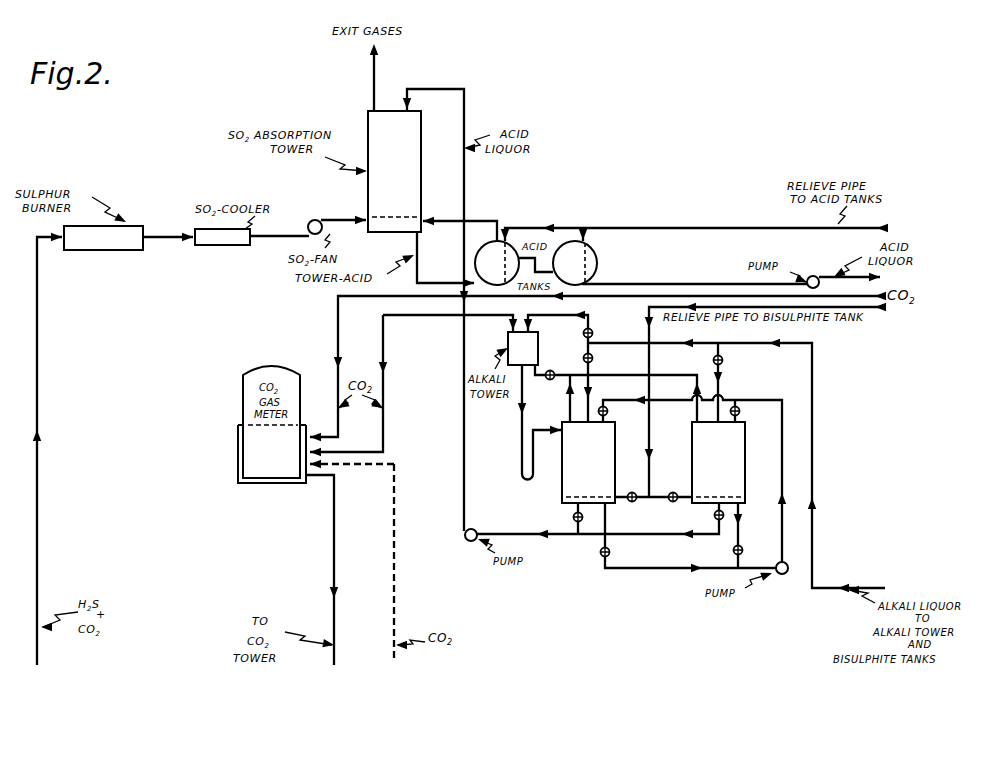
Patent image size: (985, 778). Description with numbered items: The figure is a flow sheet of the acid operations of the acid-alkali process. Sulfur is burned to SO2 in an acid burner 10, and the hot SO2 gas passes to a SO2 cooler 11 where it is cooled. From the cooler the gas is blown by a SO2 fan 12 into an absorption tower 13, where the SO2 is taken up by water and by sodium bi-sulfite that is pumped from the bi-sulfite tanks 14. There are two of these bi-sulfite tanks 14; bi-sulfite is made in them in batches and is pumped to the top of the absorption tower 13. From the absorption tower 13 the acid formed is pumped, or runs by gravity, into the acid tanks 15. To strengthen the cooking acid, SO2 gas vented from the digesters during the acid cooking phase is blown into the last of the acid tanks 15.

The acid burner 10 is at (114, 250).
The SO2 cooler 11 is at (232, 246).
The SO2 fan 12 is at (316, 220).
The absorption tower 13 is at (423, 197).
The bi-sulfite tanks 14 is at (616, 448).
The acid tanks 15 is at (479, 252).